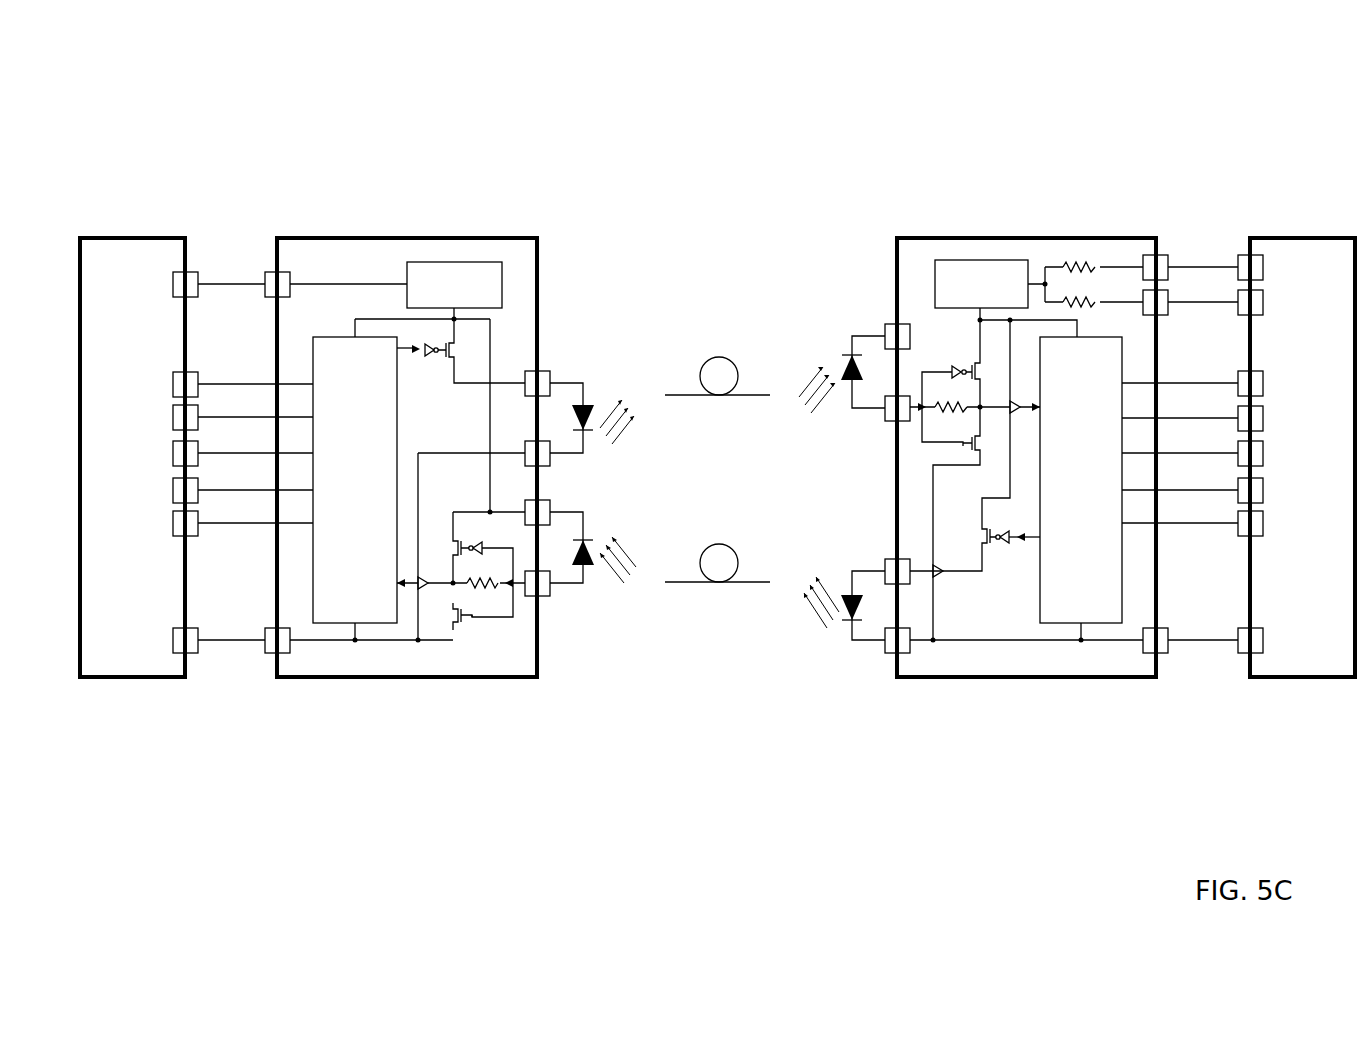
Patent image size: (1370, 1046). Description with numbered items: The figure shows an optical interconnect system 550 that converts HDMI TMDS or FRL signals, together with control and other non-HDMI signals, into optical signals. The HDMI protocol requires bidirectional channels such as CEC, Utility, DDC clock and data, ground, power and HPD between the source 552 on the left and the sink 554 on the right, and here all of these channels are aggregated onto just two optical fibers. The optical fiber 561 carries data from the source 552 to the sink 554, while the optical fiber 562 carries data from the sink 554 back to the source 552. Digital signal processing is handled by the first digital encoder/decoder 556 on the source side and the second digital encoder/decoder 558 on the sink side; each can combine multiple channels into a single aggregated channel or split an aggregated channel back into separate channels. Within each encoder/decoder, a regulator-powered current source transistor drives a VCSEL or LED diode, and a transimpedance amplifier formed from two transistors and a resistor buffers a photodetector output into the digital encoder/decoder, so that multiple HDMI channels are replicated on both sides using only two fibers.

The optical interconnect system 550 is at (266, 99).
The source 552 is at (139, 446).
The sink 554 is at (1296, 446).
The Digital Encoder/Decoder 1 556 is at (458, 446).
The Digital Encoder/Decoder 2 558 is at (979, 446).
The optical fiber 561 is at (721, 391).
The optical fiber 562 is at (721, 577).